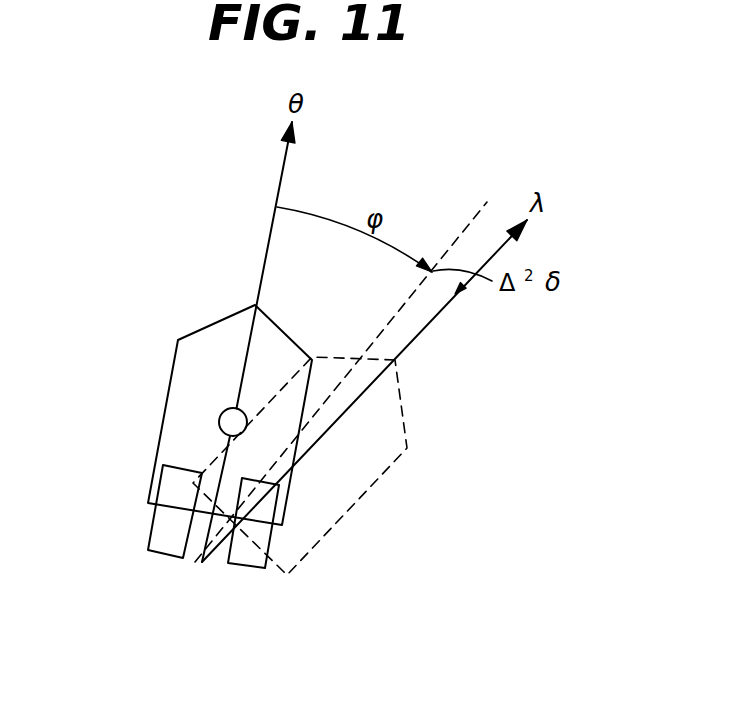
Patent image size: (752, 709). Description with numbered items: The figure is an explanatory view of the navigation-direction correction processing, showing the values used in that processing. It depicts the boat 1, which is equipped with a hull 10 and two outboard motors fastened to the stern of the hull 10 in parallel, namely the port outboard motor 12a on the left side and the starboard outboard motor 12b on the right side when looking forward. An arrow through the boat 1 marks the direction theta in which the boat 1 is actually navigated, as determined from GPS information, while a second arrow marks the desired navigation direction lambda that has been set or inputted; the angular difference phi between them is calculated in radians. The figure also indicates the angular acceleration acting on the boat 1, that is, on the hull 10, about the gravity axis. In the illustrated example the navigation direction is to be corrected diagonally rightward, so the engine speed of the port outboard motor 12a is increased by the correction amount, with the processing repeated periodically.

The boat 1 is at (160, 432).
The hull 10 is at (311, 358).
The port outboard motor 12a is at (167, 558).
The starboard outboard motor 12b is at (248, 572).